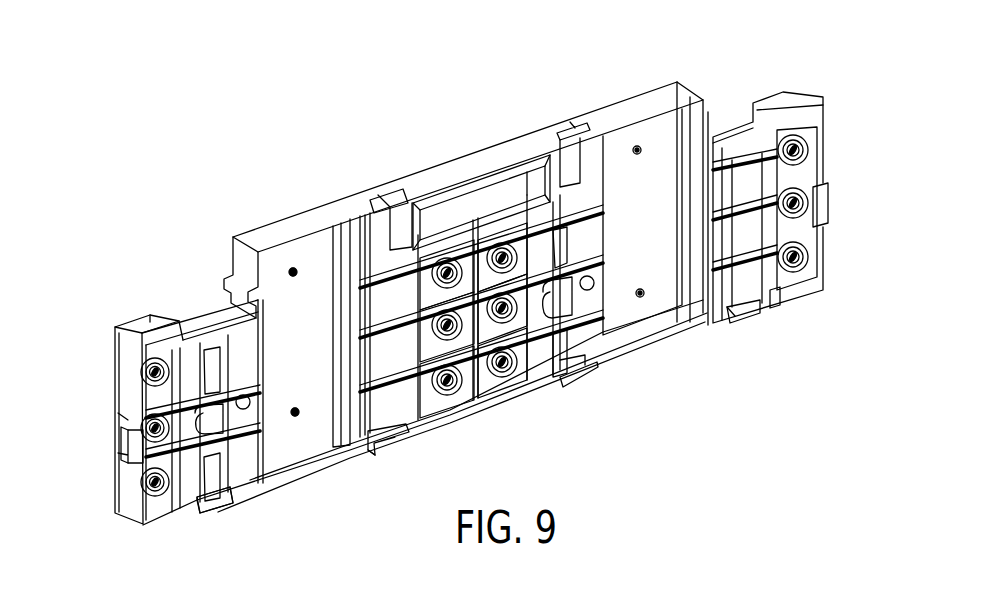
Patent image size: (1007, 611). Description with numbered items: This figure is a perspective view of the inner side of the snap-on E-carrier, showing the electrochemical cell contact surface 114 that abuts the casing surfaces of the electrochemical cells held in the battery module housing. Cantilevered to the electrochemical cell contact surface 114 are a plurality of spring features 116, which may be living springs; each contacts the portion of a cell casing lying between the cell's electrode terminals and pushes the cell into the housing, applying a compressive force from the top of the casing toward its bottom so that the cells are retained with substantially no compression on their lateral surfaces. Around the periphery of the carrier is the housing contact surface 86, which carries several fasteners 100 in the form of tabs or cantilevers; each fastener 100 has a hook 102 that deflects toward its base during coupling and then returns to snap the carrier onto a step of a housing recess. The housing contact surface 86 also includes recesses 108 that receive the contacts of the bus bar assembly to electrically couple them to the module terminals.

The housing contact surface 86 is at (123, 360).
The fastener 100 is at (358, 165).
The hook 102 is at (400, 188).
The recess 108 is at (728, 76).
The electrochemical cell contact surface 114 is at (668, 370).
The spring feature 116 is at (215, 352).